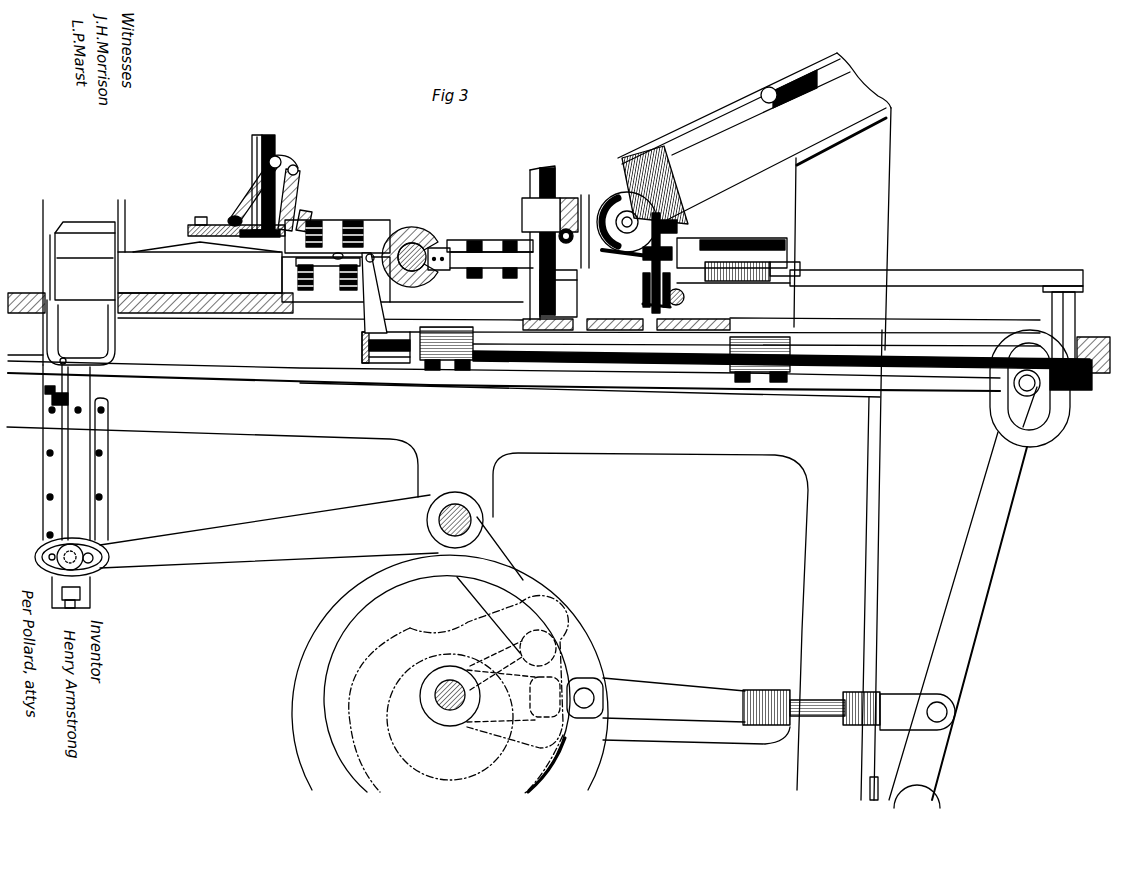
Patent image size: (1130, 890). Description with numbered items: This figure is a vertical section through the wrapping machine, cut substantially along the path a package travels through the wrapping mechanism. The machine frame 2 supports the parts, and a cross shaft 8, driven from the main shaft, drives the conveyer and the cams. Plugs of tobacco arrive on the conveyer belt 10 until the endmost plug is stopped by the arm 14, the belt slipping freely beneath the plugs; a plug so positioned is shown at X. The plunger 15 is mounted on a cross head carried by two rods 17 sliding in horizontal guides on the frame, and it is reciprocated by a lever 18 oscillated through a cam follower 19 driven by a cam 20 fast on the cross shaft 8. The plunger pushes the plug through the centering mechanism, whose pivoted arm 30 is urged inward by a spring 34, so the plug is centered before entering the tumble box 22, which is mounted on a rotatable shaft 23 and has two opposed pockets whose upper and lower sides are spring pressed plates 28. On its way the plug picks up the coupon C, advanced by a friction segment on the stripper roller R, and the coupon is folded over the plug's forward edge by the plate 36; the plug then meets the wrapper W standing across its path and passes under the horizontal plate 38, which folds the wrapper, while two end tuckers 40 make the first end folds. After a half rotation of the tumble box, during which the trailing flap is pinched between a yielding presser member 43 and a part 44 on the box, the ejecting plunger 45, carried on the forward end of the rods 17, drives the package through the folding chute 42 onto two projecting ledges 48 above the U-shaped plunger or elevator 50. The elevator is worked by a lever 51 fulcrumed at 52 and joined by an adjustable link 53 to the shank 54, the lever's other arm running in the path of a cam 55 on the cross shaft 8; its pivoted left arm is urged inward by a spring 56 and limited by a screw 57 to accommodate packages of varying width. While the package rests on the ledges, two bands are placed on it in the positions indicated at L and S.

The machine frame 2 is at (188, 318).
The cross shaft 8 is at (437, 707).
The conveyer belt 10 is at (747, 285).
The arm 14 is at (800, 269).
The plunger 15 is at (930, 280).
The rods 17 is at (942, 383).
The lever 18 is at (970, 604).
The cam follower 19 is at (673, 688).
The cam 20 is at (587, 637).
The tumble box 22 is at (403, 230).
The rotatable shaft 23 is at (420, 248).
The spring pressed plates 28 is at (293, 263).
The arm 30 is at (640, 267).
The spring 34 is at (738, 250).
The plate 36 is at (607, 258).
The horizontal plate 38 is at (573, 260).
The end tuckers 40 is at (348, 267).
The folding chute 42 is at (202, 252).
The yielding presser member 43 is at (298, 200).
The part 44 is at (308, 216).
The ejecting plunger 45 is at (370, 305).
The projecting ledges 48 is at (82, 255).
The U-shaped plunger 50 is at (110, 325).
The lever 51 is at (260, 548).
The fulcrum 52 is at (467, 519).
The adjustable link 53 is at (74, 588).
The shank 54 is at (77, 483).
The cam 55 is at (324, 647).
The spring 56 is at (50, 407).
The screw 57 is at (47, 390).
The stamp band S is at (67, 223).
The label band L is at (97, 222).
The plug X is at (55, 232).
The wrapper W is at (594, 217).
The stripper roller R is at (627, 215).
The coupon C is at (670, 240).